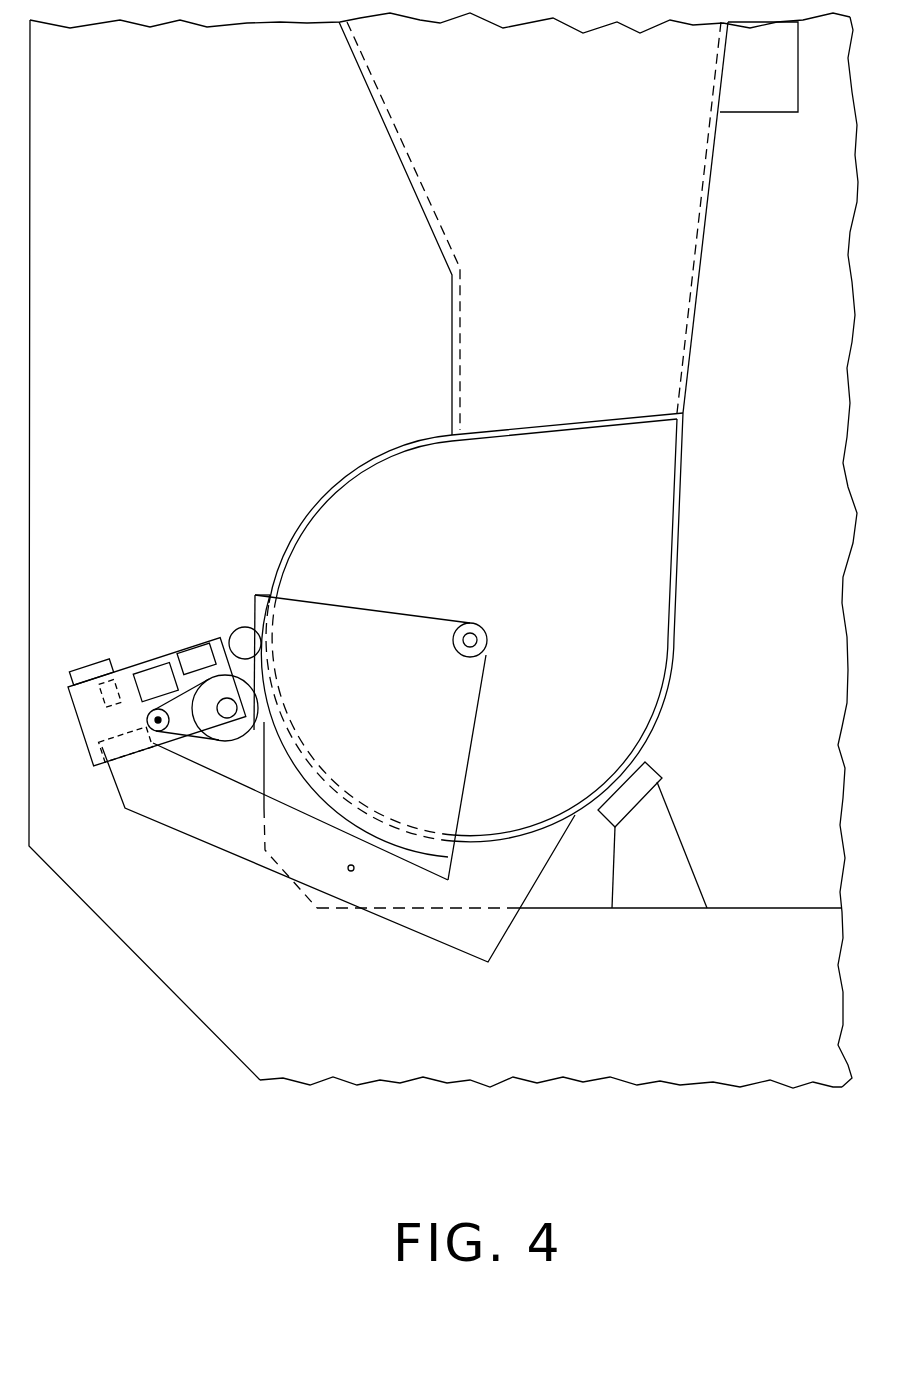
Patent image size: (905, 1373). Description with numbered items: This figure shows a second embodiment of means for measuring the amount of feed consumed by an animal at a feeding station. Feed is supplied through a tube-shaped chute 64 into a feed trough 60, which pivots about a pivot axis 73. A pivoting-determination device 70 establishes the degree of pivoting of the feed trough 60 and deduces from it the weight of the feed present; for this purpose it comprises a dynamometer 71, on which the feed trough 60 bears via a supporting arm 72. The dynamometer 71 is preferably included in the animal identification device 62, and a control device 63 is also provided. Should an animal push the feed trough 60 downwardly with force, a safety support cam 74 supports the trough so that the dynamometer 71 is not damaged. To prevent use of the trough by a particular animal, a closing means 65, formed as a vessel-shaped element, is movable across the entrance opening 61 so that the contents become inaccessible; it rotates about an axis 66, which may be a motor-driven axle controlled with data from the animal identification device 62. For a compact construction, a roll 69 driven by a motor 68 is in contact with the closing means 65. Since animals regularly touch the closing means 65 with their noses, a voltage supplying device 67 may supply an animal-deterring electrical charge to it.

The feed trough 60 is at (657, 718).
The entrance opening 61 is at (353, 475).
The animal identification device 62 is at (118, 715).
The control device 63 is at (777, 80).
The tube-shaped chute 64 is at (697, 295).
The closing means 65 is at (295, 610).
The axis 66 is at (487, 640).
The voltage supplying device 67 is at (201, 654).
The motor 68 is at (163, 747).
The roll 69 is at (234, 740).
The pivoting-determination device 70 is at (147, 671).
The dynamometer 71 is at (127, 743).
The supporting arm 72 is at (351, 871).
The pivot axis 73 is at (245, 643).
The safety support cam 74 is at (673, 872).